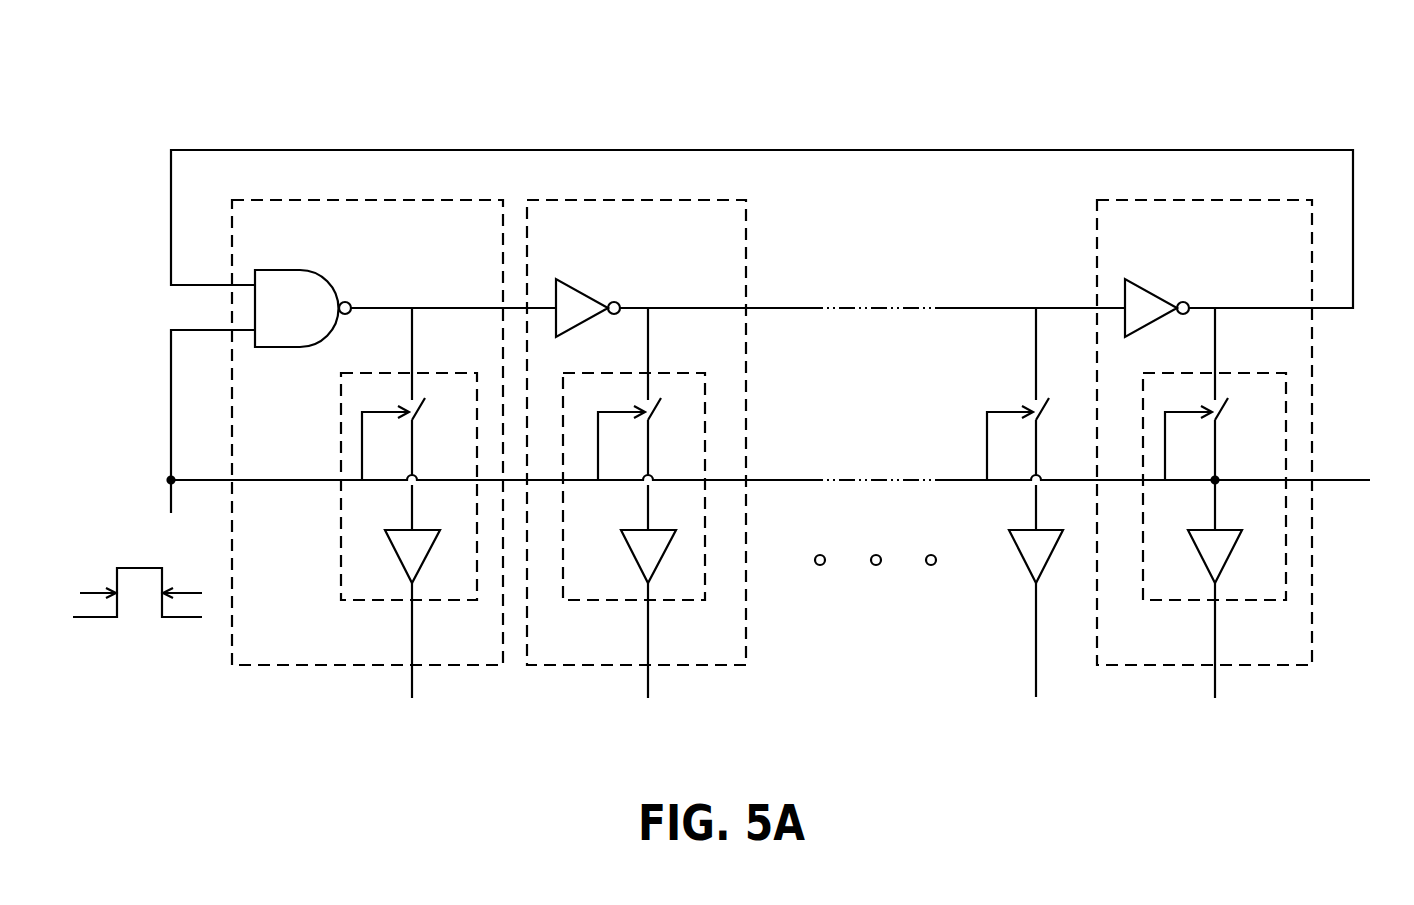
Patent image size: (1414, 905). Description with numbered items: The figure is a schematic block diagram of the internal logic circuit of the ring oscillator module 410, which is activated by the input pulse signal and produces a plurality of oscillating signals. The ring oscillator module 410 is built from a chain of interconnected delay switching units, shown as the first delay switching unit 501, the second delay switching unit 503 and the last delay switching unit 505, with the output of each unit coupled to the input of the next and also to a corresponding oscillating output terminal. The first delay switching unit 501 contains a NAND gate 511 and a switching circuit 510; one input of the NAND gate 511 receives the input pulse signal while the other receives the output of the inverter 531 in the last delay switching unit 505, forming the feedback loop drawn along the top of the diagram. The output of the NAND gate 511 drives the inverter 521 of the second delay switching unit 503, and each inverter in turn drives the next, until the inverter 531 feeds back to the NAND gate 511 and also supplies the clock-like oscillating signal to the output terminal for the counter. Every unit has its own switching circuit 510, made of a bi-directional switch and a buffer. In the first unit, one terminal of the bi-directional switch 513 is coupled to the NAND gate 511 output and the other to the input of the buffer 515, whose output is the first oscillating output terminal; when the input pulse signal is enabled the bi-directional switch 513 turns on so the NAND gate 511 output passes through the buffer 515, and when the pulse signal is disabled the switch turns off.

The ring oscillator module 410 is at (303, 105).
The first delay switching unit 501 is at (287, 668).
The second delay switching unit 503 is at (572, 668).
The last delay switching unit 505 is at (1193, 667).
The switching circuit 510 is at (340, 405).
The NAND gate 511 is at (308, 270).
The bi-directional switch 513 is at (427, 415).
The buffer 515 is at (393, 558).
The inverter 521 is at (580, 290).
The inverter 531 is at (1153, 297).